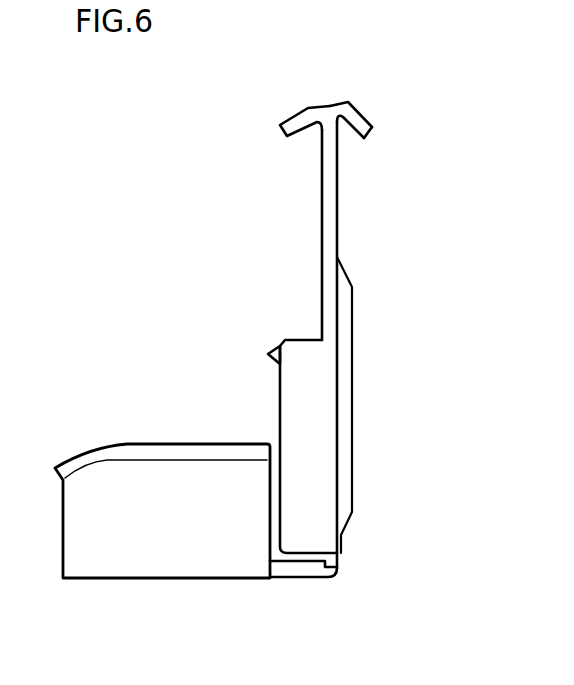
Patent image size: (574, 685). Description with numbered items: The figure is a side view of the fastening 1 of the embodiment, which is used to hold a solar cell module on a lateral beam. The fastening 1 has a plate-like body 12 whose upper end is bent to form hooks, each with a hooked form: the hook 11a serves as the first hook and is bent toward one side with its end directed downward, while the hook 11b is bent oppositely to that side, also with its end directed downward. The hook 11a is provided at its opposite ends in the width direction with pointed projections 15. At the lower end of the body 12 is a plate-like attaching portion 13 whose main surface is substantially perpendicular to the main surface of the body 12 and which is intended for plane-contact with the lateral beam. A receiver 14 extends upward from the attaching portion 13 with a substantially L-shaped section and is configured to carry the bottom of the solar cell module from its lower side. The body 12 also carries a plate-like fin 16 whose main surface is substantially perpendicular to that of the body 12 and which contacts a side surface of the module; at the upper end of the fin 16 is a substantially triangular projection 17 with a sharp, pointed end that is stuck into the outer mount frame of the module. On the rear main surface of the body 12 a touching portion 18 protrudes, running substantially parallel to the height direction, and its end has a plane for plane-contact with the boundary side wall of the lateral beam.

The fastening 1 is at (193, 132).
The hook 11a is at (357, 100).
The hook 11b is at (303, 107).
The body 12 is at (328, 272).
The attaching portion 13 is at (297, 570).
The receiver 14 is at (142, 445).
The projection 15 is at (374, 132).
The fin 16 is at (312, 409).
The projection 17 is at (268, 354).
The touching portion 18 is at (345, 372).